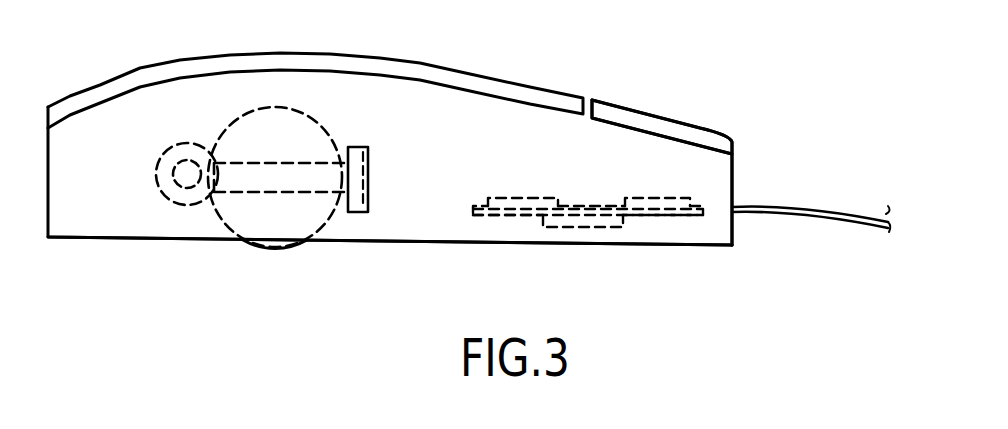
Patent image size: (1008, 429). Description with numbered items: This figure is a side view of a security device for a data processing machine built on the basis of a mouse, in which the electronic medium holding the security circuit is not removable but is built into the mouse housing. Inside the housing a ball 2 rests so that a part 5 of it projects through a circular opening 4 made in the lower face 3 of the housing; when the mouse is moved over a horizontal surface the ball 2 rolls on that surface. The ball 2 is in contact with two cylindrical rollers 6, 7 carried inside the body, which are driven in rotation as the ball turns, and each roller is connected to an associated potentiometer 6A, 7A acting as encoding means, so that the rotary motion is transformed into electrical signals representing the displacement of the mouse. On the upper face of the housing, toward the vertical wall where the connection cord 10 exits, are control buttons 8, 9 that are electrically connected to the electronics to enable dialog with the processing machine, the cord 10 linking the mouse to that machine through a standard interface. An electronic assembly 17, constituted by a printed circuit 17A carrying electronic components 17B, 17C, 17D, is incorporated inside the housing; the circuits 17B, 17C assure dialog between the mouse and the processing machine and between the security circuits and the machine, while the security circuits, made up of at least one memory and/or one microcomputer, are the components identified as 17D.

The ball 2 is at (277, 118).
The lower face 3 is at (404, 245).
The circular opening 4 is at (307, 242).
The projecting part of the ball 5 is at (240, 240).
The cylindrical roller 6 is at (299, 177).
The potentiometer 6A is at (360, 148).
The cylindrical roller 7 is at (191, 189).
The potentiometer 7A is at (162, 191).
The control button 8 is at (648, 110).
The control button 9 is at (648, 110).
The connection cord 10 is at (833, 207).
The electronic assembly 17 is at (613, 224).
The printed circuit 17A is at (677, 216).
The electronic component 17B is at (641, 198).
The electronic component 17C is at (567, 228).
The security circuit 17D is at (511, 198).